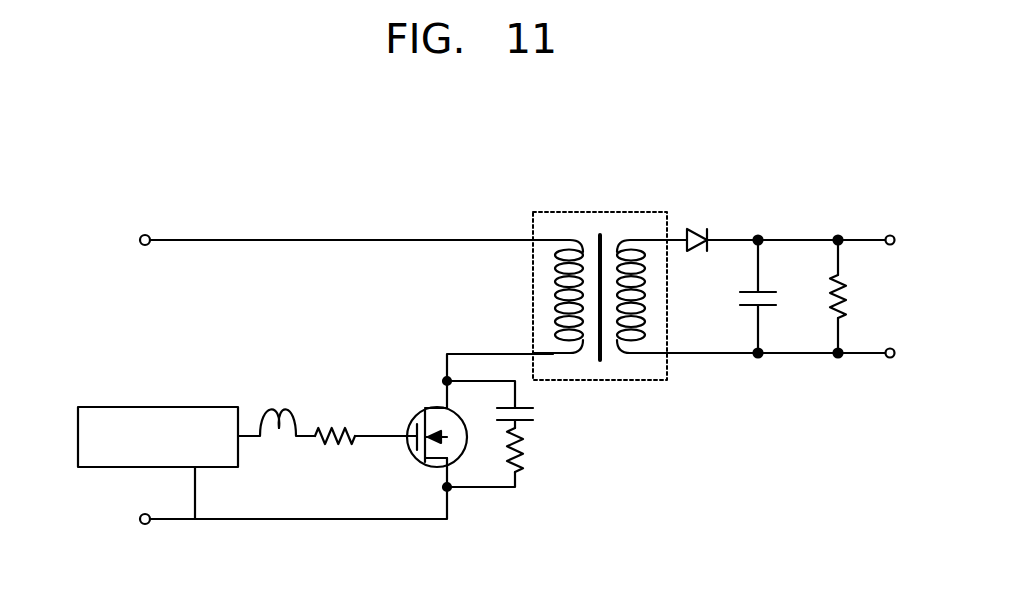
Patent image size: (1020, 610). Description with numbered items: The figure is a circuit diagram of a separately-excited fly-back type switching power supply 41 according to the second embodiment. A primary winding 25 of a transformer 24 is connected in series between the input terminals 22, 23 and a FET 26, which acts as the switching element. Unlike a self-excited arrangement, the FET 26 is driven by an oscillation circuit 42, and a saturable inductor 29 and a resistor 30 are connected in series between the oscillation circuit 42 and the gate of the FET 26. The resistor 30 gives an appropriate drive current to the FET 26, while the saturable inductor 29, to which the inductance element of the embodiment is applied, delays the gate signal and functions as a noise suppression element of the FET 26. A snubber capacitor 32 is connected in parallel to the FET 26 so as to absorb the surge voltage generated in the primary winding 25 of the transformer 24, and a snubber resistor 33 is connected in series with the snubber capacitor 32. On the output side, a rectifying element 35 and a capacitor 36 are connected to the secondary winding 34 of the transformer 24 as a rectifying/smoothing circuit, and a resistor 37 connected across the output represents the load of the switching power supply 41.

The switching power supply 41 is at (329, 180).
The input terminal 22 is at (142, 233).
The input terminal 23 is at (145, 526).
The oscillation circuit 42 is at (200, 405).
The saturable inductor 29 is at (300, 392).
The resistor 30 is at (340, 420).
The FET 26 is at (410, 420).
The snubber capacitor 32 is at (530, 417).
The snubber resistor 33 is at (525, 445).
The transformer 24 is at (548, 212).
The primary winding 25 is at (553, 294).
The secondary winding 34 is at (648, 298).
The rectifying element 35 is at (690, 230).
The capacitor 36 is at (776, 292).
The resistor 37 is at (847, 305).